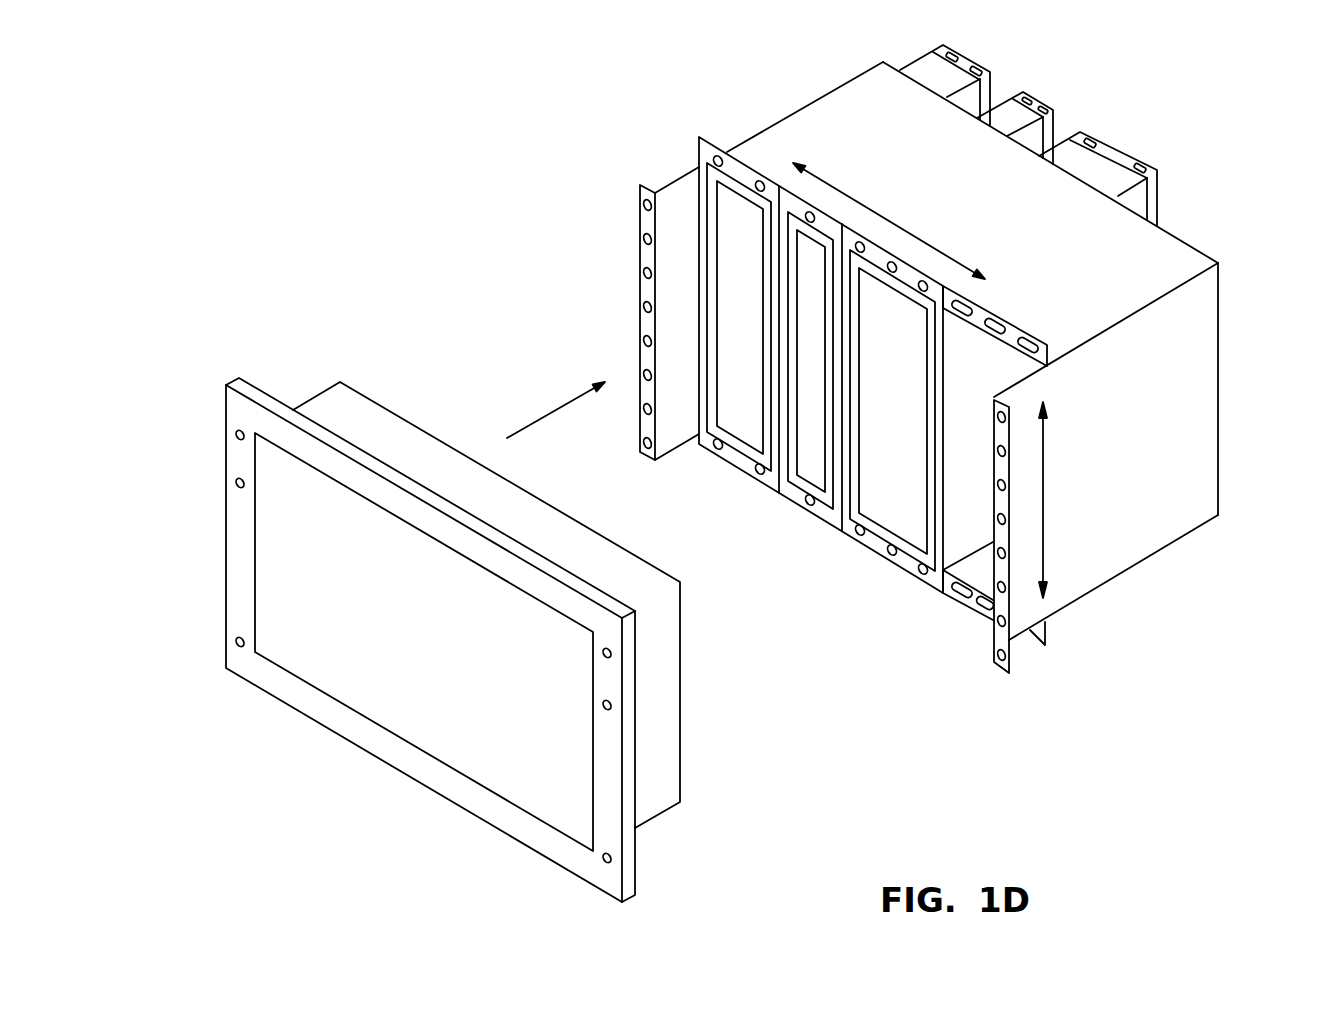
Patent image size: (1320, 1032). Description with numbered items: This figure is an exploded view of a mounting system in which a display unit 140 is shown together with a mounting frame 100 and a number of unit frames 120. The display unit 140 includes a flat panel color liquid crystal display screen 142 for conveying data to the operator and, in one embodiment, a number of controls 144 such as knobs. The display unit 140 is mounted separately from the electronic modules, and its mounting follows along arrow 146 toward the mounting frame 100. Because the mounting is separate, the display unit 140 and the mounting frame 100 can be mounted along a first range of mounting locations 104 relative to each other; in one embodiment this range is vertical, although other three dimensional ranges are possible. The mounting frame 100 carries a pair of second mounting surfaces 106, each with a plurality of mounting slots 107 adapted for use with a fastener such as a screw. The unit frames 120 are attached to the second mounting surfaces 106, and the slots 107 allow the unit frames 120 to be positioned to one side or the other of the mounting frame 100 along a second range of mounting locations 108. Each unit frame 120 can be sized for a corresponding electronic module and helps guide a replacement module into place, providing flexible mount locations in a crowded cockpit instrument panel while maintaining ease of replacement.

The mounting frame 100 is at (1237, 168).
The first range of mounting locations 104 is at (1044, 497).
The second mounting surfaces 106 is at (982, 311).
The mounting slots 107 is at (992, 322).
The second range of mounting locations 108 is at (892, 222).
The unit frames 120 is at (1095, 160).
The display unit 140 is at (419, 593).
The LCD screen 142 is at (343, 690).
The controls 144 is at (236, 637).
The arrow 146 is at (557, 406).